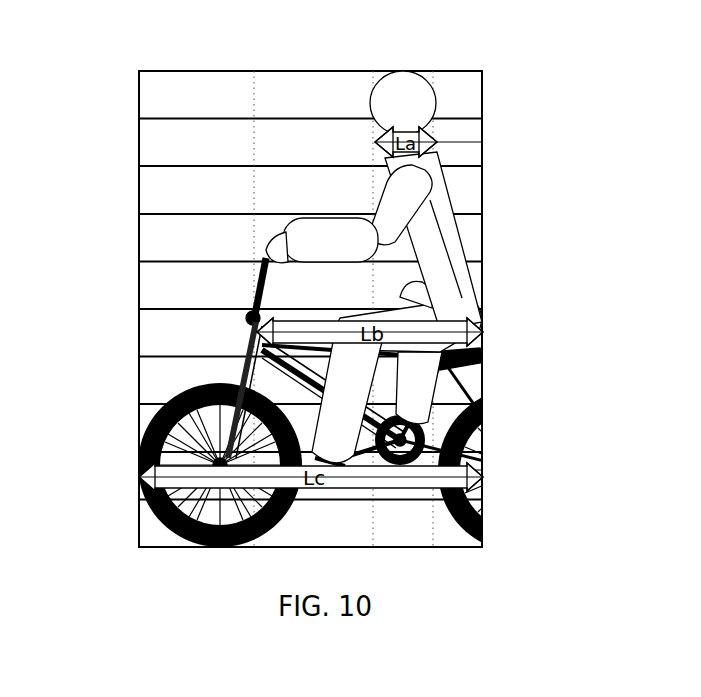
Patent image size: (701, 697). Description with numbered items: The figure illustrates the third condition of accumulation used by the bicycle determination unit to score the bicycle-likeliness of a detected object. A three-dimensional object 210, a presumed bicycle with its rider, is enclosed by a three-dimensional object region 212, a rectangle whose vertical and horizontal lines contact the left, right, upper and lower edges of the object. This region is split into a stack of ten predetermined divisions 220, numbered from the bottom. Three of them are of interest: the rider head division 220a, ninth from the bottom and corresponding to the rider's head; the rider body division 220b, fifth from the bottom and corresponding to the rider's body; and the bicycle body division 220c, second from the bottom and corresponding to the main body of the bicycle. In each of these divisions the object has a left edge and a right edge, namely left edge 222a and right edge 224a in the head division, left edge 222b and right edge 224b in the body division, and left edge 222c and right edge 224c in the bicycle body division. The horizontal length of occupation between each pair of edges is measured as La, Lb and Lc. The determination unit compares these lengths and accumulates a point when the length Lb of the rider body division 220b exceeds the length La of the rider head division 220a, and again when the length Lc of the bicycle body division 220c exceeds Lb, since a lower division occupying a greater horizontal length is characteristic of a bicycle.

The three-dimensional object 210 is at (413, 93).
The three-dimensional object region 212 is at (227, 71).
The predetermined divisions 220 is at (388, 318).
The rider head division 220a is at (483, 138).
The rider body division 220b is at (483, 342).
The bicycle body division 220c is at (483, 490).
The left edge 222a is at (374, 130).
The left edge 222b is at (256, 352).
The left edge 222c is at (139, 476).
The right edge 224a is at (437, 157).
The right edge 224b is at (483, 320).
The right edge 224c is at (483, 478).